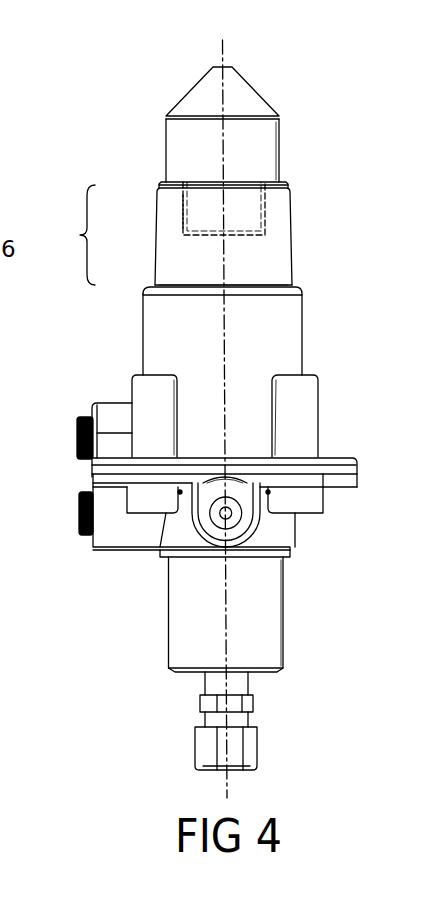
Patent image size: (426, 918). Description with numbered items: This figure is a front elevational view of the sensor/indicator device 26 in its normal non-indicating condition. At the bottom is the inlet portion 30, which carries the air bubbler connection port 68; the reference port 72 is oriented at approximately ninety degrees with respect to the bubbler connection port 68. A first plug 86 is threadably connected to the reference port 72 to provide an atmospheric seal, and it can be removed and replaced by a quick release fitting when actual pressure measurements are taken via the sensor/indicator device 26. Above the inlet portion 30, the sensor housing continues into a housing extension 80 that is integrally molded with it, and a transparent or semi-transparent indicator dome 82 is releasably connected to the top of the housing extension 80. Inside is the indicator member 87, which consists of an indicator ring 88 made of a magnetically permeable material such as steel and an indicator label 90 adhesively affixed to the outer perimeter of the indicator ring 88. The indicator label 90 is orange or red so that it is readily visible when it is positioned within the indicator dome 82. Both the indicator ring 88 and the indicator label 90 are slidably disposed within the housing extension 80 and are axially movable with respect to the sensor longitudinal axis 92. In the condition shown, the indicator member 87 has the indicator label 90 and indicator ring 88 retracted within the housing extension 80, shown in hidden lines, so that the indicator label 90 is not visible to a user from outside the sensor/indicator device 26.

The sensor/indicator device 26 is at (357, 352).
The inlet portion 30 is at (187, 618).
The air bubbler connection port 68 is at (232, 519).
The reference port 72 is at (90, 539).
The housing extension 80 is at (171, 270).
The indicator dome 82 is at (270, 160).
The first plug 86 is at (80, 513).
The indicator member 87 is at (74, 235).
The indicator ring 88 is at (263, 212).
The indicator label 90 is at (183, 219).
The sensor longitudinal axis 92 is at (223, 98).